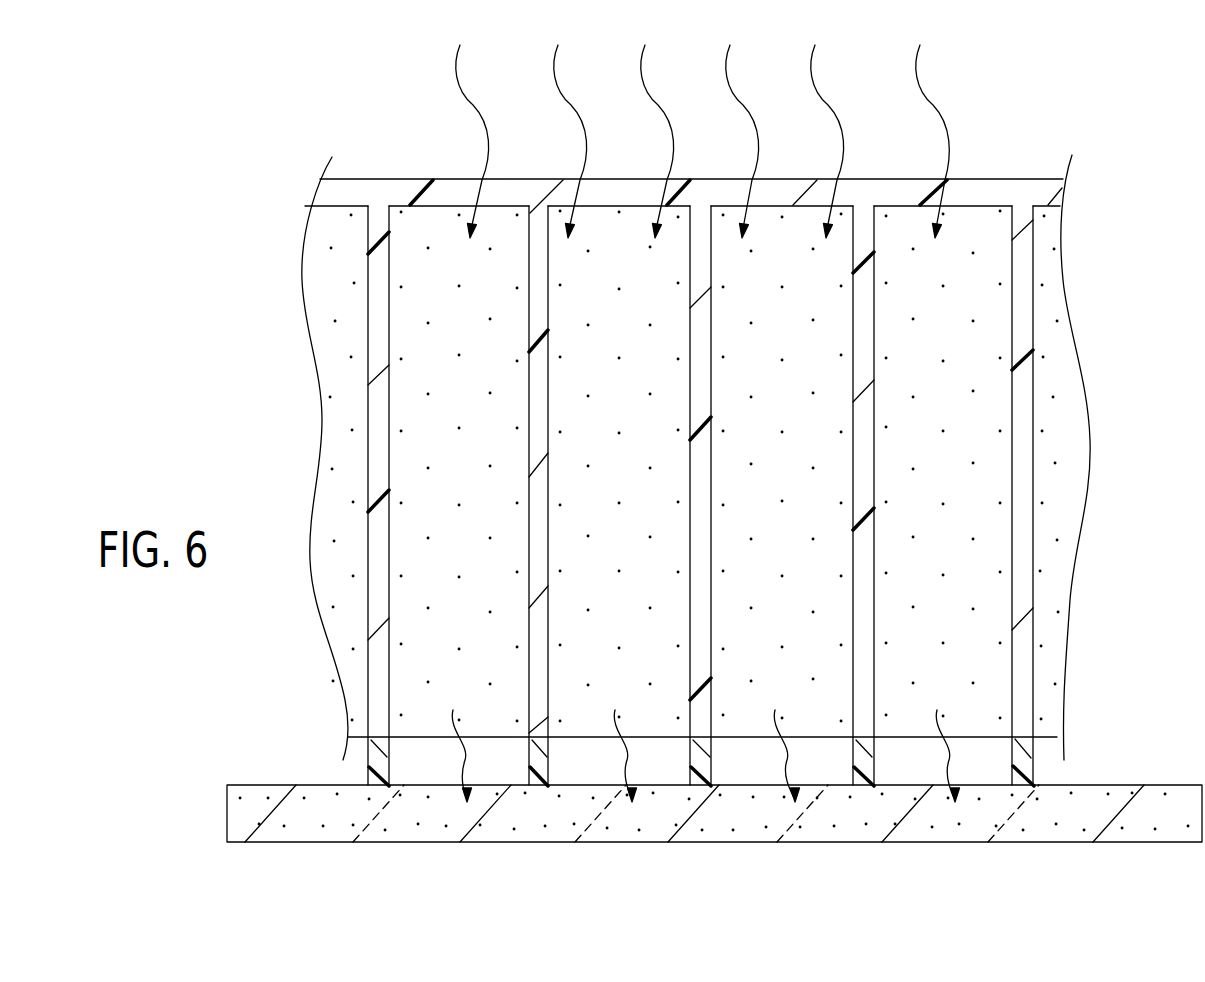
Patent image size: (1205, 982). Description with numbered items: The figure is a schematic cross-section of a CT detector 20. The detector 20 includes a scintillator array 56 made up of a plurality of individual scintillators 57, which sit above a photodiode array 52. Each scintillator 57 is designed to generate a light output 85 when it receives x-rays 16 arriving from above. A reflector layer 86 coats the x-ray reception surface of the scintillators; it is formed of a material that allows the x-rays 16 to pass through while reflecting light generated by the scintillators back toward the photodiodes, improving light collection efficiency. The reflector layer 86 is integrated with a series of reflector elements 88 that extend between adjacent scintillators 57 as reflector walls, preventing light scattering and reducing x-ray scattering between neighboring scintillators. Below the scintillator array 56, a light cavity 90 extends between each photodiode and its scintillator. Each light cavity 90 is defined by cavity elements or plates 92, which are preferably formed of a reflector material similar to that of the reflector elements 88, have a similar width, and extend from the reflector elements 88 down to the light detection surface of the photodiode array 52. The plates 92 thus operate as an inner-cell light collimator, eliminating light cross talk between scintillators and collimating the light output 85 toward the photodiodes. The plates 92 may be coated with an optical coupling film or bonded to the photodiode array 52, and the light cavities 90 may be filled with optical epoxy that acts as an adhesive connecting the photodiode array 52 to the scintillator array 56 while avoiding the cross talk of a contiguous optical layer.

The CT detector 20 is at (193, 73).
The x-rays 16 is at (470, 110).
The reflector layer 86 is at (986, 186).
The scintillator array 56 is at (178, 337).
The reflector elements 88 is at (378, 590).
The scintillators 57 is at (954, 457).
The plates 92 is at (724, 755).
The light output 85 is at (468, 766).
The light cavity 90 is at (427, 770).
The photodiode array 52 is at (276, 843).